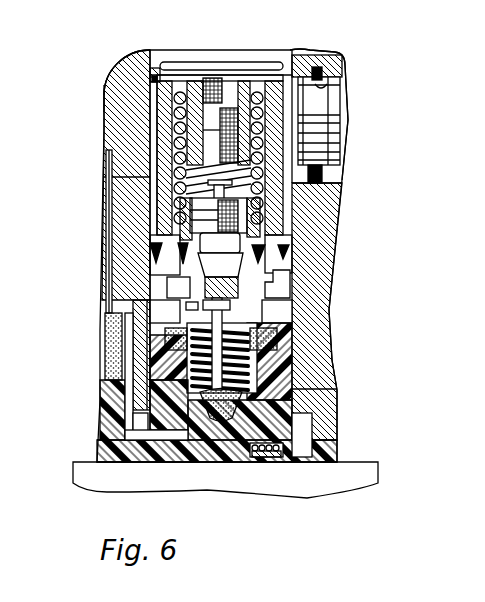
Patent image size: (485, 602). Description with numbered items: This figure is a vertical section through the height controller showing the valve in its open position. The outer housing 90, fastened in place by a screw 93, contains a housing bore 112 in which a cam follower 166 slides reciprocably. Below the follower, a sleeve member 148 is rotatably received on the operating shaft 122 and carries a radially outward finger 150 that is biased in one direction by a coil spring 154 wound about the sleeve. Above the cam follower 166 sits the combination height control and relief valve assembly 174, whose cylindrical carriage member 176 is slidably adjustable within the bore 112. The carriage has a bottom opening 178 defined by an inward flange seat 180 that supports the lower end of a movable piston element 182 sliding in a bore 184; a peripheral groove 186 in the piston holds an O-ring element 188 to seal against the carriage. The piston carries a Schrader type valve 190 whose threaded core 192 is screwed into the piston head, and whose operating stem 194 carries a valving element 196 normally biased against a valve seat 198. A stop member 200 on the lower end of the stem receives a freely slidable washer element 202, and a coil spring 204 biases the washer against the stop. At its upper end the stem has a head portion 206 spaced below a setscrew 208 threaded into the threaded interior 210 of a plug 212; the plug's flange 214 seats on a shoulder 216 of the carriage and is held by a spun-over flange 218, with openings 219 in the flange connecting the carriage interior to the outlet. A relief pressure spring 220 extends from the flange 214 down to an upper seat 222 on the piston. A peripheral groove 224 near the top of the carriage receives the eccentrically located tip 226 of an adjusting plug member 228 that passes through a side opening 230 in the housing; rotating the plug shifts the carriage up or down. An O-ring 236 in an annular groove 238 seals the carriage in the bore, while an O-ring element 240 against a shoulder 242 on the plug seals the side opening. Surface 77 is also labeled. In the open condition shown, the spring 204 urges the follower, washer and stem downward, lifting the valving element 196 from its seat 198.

The housing wall step 77 is at (102, 178).
The outer housing 90 is at (153, 77).
The screw 93 is at (104, 95).
The housing bore 112 is at (330, 313).
The operating shaft 122 is at (107, 470).
The sleeve member 148 is at (183, 460).
The finger 150 is at (108, 323).
The coil spring 154 is at (280, 463).
The cam follower 166 is at (293, 388).
The combination height control and relief valve assembly 174 is at (343, 212).
The cylindrical carriage member 176 is at (290, 188).
The bottom opening 178 is at (190, 306).
The flange seat 180 is at (323, 333).
The movable piston element 182 is at (303, 300).
The bore 184 is at (200, 295).
The peripheral groove 186 is at (310, 266).
The O-ring element 188 is at (290, 250).
The Schrader type valve 190 is at (267, 270).
The threaded core 192 is at (203, 228).
The operating stem 194 is at (150, 198).
The valving element 196 is at (277, 353).
The valve seat 198 is at (150, 348).
The stop member 200 is at (222, 453).
The washer element 202 is at (150, 442).
The coil spring 204 is at (167, 377).
The head portion 206 is at (325, 152).
The setscrew 208 is at (150, 163).
The threaded interior 210 is at (230, 78).
The plug 212 is at (245, 78).
The flange 214 is at (150, 77).
The shoulder 216 is at (292, 72).
The spun-over flange 218 is at (167, 72).
The openings 219 is at (173, 78).
The relief pressure spring 220 is at (213, 140).
The upper seat 222 is at (277, 235).
The peripheral groove 224 is at (153, 107).
The eccentrically located tip 226 is at (300, 110).
The adjusting plug member 228 is at (342, 125).
The side opening 230 is at (343, 176).
The O-ring 236 is at (180, 285).
The annular groove 238 is at (153, 250).
The O-ring element 240 is at (340, 58).
The shoulder 242 is at (321, 88).